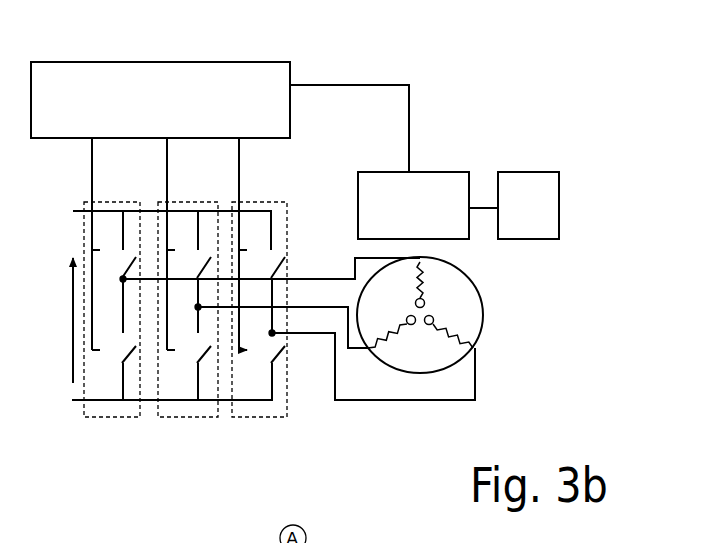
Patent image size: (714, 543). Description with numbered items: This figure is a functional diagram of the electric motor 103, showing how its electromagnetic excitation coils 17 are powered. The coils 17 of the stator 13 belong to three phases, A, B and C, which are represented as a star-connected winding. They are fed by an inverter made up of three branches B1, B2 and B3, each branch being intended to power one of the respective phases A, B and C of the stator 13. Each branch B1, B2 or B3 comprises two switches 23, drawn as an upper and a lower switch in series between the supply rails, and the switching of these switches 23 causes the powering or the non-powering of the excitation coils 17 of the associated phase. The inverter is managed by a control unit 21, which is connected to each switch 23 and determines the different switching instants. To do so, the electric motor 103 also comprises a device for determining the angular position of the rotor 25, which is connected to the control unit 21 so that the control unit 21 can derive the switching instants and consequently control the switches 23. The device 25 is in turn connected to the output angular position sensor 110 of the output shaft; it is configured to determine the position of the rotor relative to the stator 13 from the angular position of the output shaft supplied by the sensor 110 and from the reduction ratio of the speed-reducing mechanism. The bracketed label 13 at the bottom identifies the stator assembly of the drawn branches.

The electric motor 103 is at (440, 68).
The control unit 21 is at (173, 113).
The device for determining the angular position of the rotor 25 is at (427, 218).
The output angular position sensor 110 is at (552, 218).
The switches 23 is at (178, 305).
The first branch B1 is at (113, 418).
The second branch B2 is at (187, 418).
The third branch B3 is at (258, 418).
The electromagnetic excitation coils 17 is at (415, 290).
The stator 13 is at (128, 478).